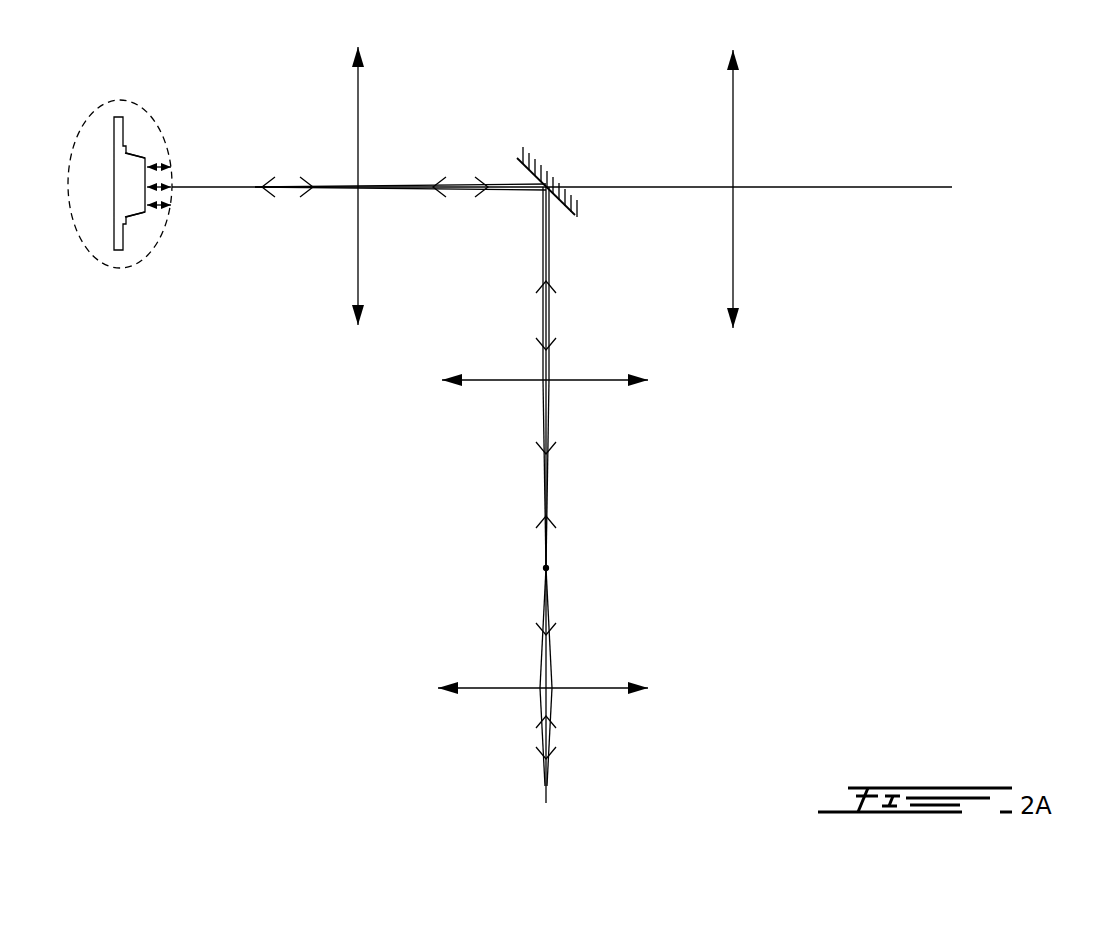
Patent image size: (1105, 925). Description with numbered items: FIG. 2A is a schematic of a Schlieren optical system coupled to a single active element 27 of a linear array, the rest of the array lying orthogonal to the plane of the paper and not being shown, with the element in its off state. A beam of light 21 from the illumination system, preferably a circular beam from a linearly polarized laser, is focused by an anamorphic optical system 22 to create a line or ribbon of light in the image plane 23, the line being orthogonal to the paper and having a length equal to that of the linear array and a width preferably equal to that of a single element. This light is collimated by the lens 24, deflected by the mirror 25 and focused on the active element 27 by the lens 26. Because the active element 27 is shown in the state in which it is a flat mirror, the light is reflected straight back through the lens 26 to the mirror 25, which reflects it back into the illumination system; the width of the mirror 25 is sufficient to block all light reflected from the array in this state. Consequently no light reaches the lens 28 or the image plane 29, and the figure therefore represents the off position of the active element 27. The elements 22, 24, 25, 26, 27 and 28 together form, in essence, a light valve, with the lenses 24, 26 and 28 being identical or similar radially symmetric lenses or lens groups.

The beam of light 21 is at (549, 738).
The optical system 22 is at (608, 688).
The image plane 23 is at (546, 568).
The lens 24 is at (608, 380).
The mirror 25 is at (543, 162).
The lens 26 is at (358, 122).
The active element 27 is at (158, 106).
The lens 28 is at (733, 242).
The image plane 29 is at (925, 190).